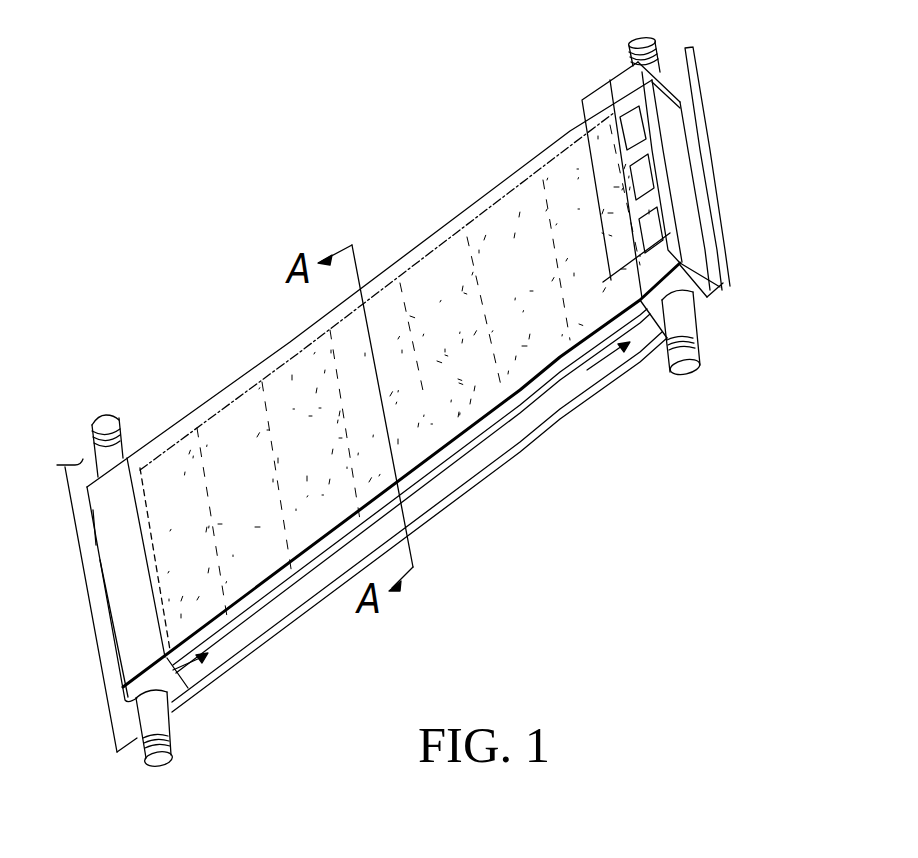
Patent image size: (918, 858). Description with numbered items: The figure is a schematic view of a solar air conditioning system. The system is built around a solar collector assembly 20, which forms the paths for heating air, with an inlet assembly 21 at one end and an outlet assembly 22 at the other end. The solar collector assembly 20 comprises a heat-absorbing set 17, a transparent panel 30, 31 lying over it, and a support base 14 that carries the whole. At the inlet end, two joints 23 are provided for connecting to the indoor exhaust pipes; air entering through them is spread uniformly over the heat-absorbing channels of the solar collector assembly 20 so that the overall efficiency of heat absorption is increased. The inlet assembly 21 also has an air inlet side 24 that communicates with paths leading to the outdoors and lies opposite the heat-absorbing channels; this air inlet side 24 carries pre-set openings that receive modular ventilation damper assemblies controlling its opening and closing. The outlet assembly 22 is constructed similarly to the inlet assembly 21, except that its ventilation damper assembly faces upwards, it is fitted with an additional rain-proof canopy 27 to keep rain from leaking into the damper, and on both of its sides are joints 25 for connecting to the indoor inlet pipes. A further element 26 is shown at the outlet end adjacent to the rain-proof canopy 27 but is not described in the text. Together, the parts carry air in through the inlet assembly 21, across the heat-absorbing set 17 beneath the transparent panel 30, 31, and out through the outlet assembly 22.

The support base 14 is at (302, 613).
The heat-absorbing set 17 is at (500, 435).
The solar collector assembly 20 is at (431, 238).
The inlet assembly 21 is at (124, 582).
The outlet assembly 22 is at (690, 212).
The joints 23 is at (132, 453).
The air inlet side 24 is at (93, 527).
The joints 25 is at (636, 60).
The edge strip 26 is at (723, 263).
The rain-proof canopy 27 is at (583, 150).
The transparent panel 30 is at (236, 410).
The transparent panel 31 is at (238, 358).